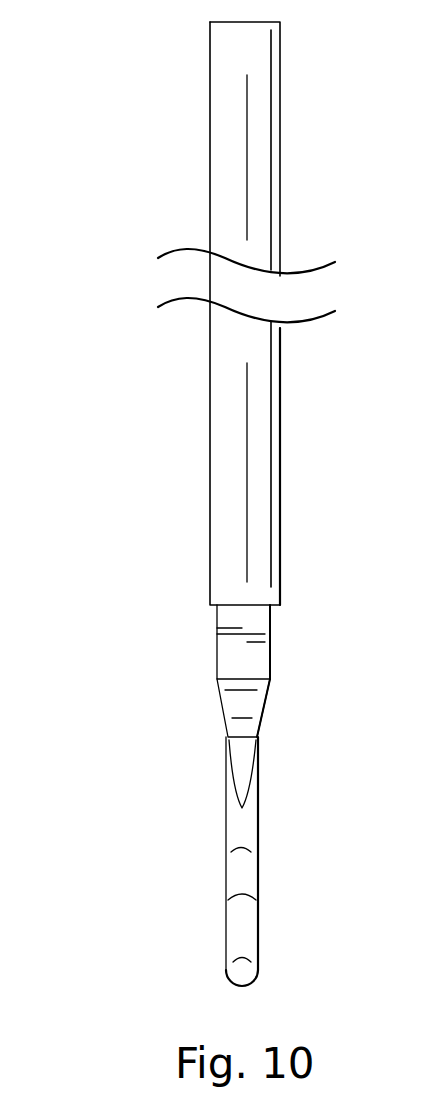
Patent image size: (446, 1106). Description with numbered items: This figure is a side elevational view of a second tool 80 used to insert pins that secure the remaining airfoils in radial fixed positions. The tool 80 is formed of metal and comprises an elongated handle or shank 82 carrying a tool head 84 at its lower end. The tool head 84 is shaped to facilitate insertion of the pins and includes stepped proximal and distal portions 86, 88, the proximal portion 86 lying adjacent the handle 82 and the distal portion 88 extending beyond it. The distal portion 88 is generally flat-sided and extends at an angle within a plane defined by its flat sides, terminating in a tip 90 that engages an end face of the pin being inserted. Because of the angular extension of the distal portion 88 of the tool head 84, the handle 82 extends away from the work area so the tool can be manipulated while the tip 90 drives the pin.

The second tool 80 is at (122, 479).
The elongated handle or shank 82 is at (210, 345).
The tool head 84 is at (217, 661).
The proximal portion 86 is at (258, 663).
The distal portion 88 is at (259, 815).
The tip 90 is at (236, 972).